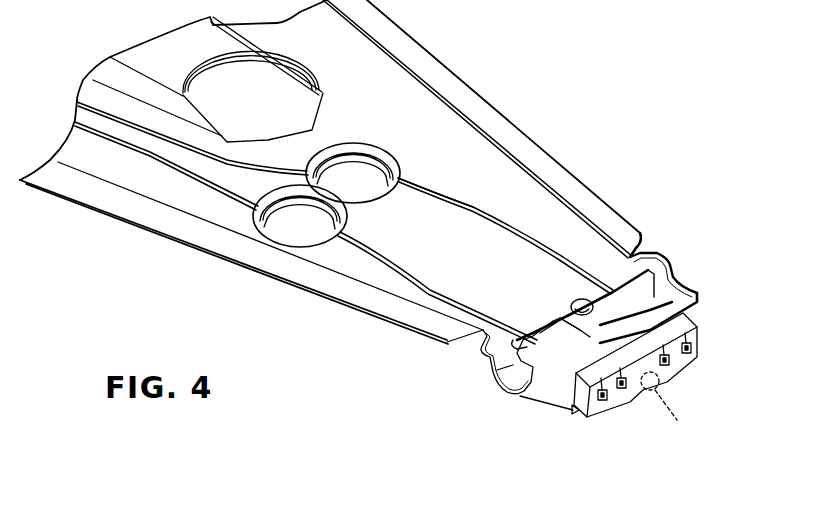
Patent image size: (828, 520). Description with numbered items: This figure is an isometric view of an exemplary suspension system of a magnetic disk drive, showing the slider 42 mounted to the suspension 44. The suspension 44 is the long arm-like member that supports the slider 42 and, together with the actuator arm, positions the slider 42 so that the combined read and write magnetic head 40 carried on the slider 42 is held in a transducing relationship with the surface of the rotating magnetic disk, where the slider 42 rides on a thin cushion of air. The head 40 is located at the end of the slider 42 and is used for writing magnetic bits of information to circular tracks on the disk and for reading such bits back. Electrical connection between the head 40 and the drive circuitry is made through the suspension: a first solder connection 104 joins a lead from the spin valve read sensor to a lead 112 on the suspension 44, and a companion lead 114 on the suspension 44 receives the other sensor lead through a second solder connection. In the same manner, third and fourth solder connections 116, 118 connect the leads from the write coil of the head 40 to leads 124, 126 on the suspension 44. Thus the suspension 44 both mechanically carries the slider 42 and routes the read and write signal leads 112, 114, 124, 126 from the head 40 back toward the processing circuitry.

The suspension 44 is at (500, 108).
The slider 42 is at (544, 401).
The magnetic head 40 is at (674, 420).
The first solder connection 104 is at (585, 400).
The lead 112 is at (373, 257).
The lead 114 is at (557, 242).
The third solder connection 116 is at (697, 345).
The fourth solder connection 118 is at (672, 363).
The lead 124 is at (415, 273).
The lead 126 is at (473, 208).